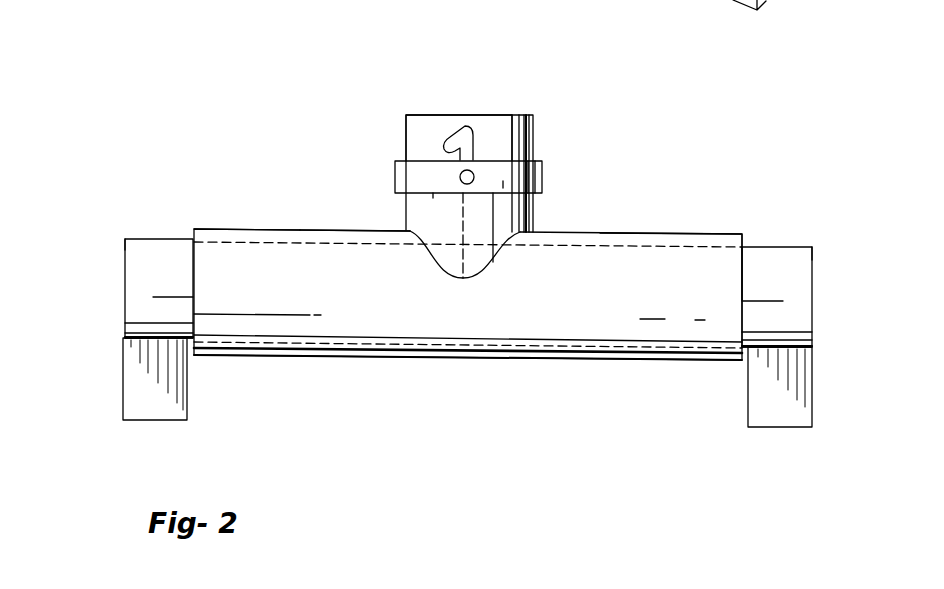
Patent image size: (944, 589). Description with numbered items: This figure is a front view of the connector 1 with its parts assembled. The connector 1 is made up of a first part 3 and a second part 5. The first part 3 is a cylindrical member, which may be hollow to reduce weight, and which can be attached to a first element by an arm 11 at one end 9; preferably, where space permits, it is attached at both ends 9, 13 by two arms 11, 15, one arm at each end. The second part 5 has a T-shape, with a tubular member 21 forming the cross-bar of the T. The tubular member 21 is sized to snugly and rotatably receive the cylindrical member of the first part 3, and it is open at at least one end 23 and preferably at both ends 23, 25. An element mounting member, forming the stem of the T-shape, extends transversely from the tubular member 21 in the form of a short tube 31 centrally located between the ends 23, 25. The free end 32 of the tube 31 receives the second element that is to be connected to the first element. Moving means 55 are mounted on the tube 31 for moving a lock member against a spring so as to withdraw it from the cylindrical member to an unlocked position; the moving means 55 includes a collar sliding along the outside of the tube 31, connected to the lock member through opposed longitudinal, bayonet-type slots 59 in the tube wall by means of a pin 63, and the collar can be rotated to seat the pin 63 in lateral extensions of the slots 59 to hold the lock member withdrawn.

The connector 1 is at (145, 133).
The first part 3 is at (820, 236).
The second part 5 is at (598, 228).
The end 9 is at (812, 303).
The arm 11 is at (800, 405).
The end 13 is at (125, 267).
The arm 15 is at (133, 389).
The tubular member 21 is at (307, 232).
The end 23 is at (742, 243).
The end 25 is at (193, 233).
The tube 31 is at (407, 145).
The free end 32 is at (417, 113).
The moving means 55 is at (547, 172).
The slots 59 is at (477, 142).
The pin 63 is at (460, 176).